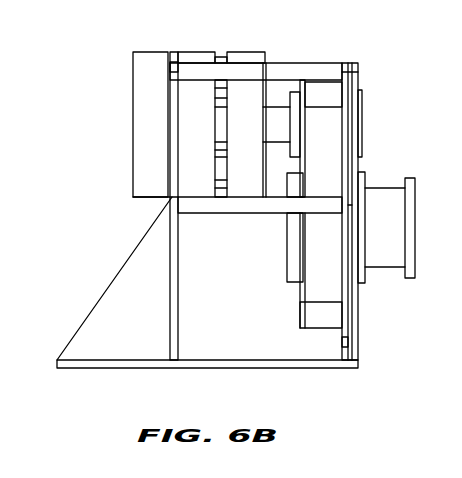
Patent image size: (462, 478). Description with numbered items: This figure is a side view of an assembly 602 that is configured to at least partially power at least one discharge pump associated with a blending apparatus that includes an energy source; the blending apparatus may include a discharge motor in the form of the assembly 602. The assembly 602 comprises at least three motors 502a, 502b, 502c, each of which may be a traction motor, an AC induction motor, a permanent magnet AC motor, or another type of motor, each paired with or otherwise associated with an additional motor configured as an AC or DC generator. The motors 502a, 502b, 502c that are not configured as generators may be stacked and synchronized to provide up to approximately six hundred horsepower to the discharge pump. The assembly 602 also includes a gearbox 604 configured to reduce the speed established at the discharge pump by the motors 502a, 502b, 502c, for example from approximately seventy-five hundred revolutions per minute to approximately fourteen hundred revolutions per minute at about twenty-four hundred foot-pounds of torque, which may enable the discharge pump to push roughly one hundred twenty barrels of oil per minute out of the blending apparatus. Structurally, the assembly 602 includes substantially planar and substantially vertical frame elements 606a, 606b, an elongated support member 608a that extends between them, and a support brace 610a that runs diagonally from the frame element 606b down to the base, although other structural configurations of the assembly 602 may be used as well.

The motor 502a is at (147, 163).
The motor 502b is at (193, 57).
The motor 502c is at (252, 57).
The gearbox 604 is at (323, 92).
The elongated support member 608a is at (248, 215).
The support brace 610a is at (98, 298).
The frame element 606b is at (168, 317).
The frame element 606a is at (360, 298).
The assembly 602 is at (327, 379).